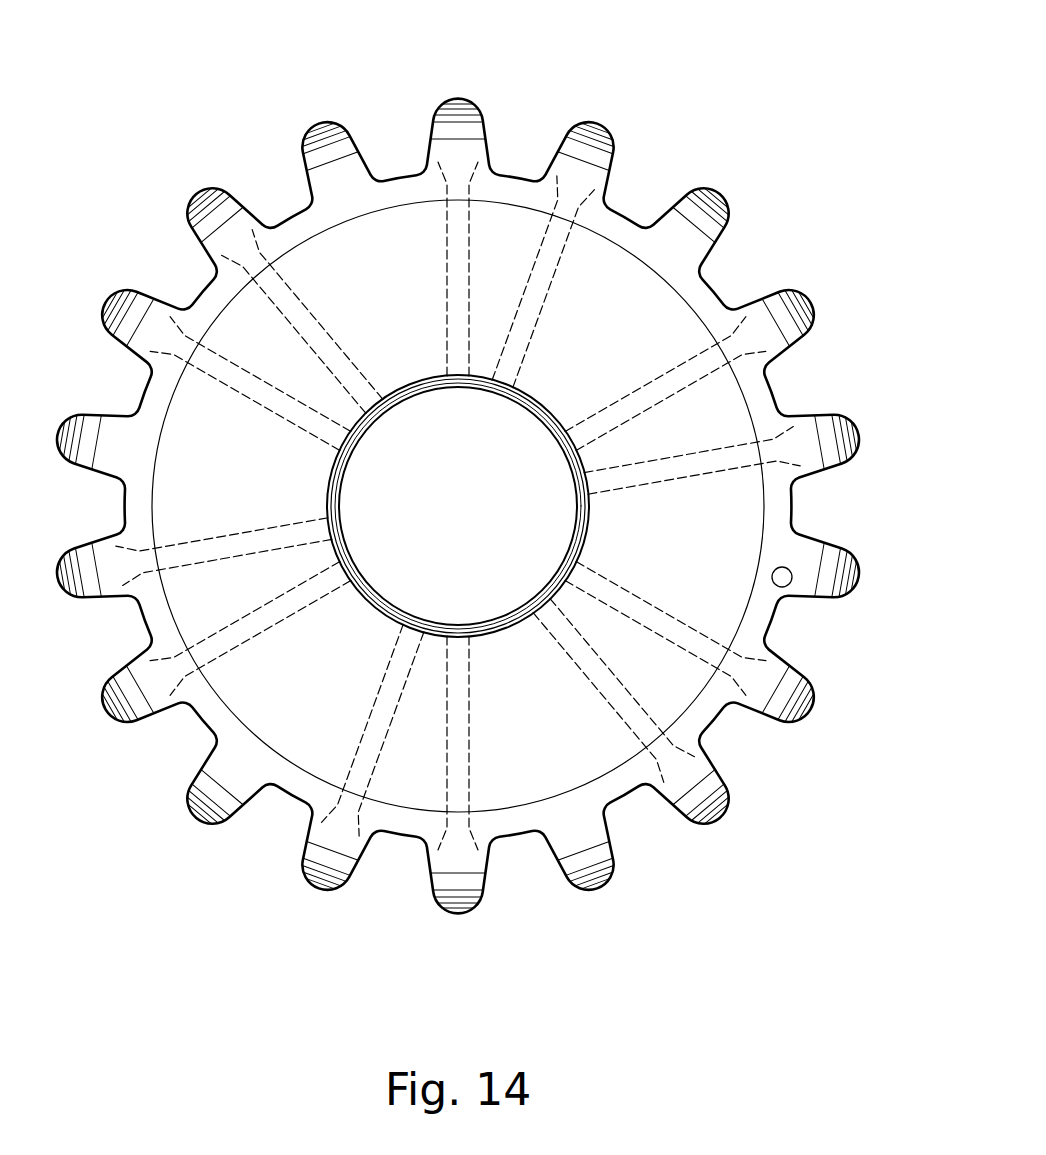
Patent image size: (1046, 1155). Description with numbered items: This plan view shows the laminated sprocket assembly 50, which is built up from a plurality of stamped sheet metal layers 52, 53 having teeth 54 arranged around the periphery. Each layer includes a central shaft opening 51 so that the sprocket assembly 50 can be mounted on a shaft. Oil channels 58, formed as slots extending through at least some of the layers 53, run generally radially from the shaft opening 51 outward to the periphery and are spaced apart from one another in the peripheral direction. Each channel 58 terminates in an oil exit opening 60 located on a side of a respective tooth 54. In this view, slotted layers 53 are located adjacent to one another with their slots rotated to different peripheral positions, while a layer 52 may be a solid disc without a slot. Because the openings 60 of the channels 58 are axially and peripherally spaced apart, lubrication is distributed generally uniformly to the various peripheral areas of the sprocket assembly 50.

The laminated sprocket assembly 50 is at (501, 458).
The shaft opening 51 is at (557, 497).
The layer 52 is at (808, 556).
The layer 53 is at (789, 585).
The teeth 54 is at (459, 101).
The oil channels 58 is at (458, 181).
The oil exit opening 60 is at (452, 172).